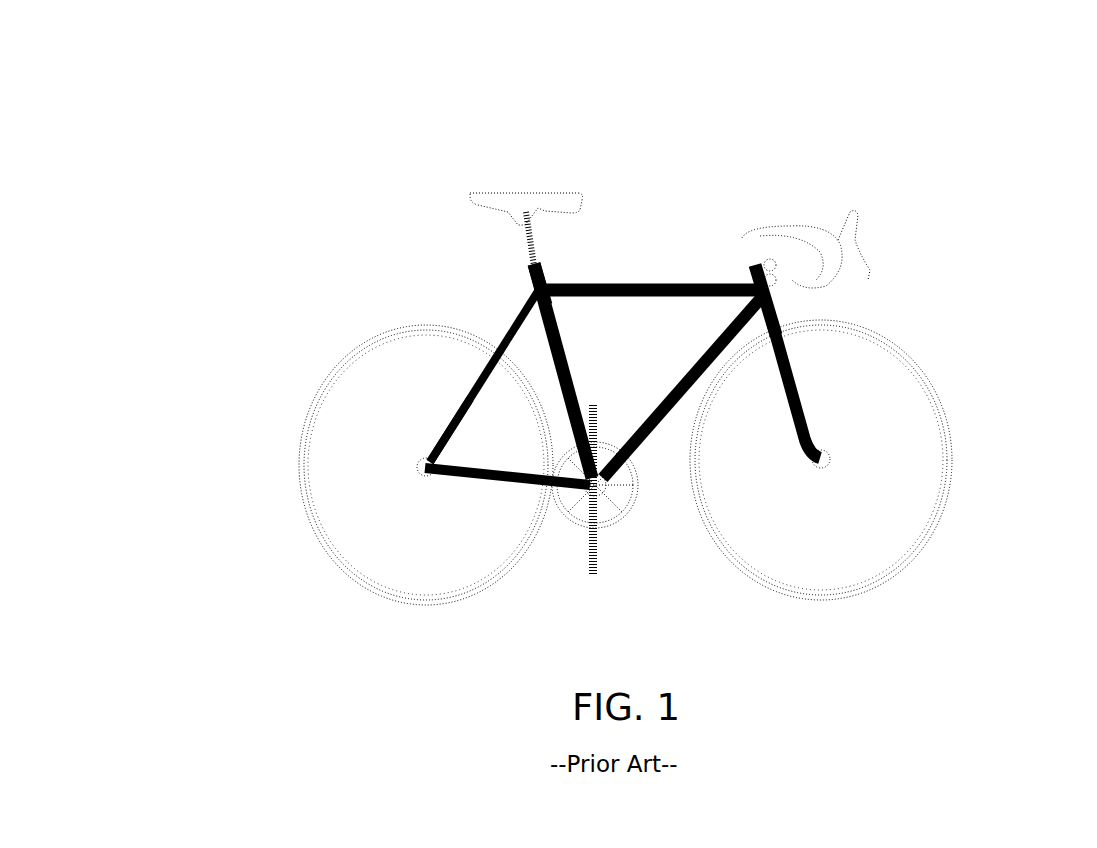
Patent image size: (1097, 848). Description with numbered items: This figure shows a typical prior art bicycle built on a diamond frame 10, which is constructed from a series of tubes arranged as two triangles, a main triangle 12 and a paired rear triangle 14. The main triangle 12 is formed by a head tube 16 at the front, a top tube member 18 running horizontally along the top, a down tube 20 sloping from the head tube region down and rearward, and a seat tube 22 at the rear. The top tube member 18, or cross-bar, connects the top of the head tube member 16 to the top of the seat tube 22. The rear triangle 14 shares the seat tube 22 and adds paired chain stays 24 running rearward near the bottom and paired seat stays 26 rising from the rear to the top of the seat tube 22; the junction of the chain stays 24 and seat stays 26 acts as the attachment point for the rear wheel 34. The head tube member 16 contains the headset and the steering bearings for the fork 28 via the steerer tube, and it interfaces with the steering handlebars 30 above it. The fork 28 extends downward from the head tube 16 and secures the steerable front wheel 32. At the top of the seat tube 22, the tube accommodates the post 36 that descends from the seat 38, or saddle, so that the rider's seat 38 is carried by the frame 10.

The diamond frame 10 is at (912, 103).
The main triangle 12 is at (697, 292).
The rear triangle 14 is at (513, 310).
The head tube 16 is at (768, 302).
The top tube member 18 is at (565, 292).
The down tube 20 is at (662, 430).
The seat tube 22 is at (557, 380).
The chain stays 24 is at (490, 480).
The seat stays 26 is at (450, 428).
The fork 28 is at (806, 430).
The steering handlebars 30 is at (822, 243).
The front wheel 32 is at (937, 521).
The rear wheel 34 is at (312, 493).
The post 36 is at (528, 253).
The seat 38 is at (537, 198).